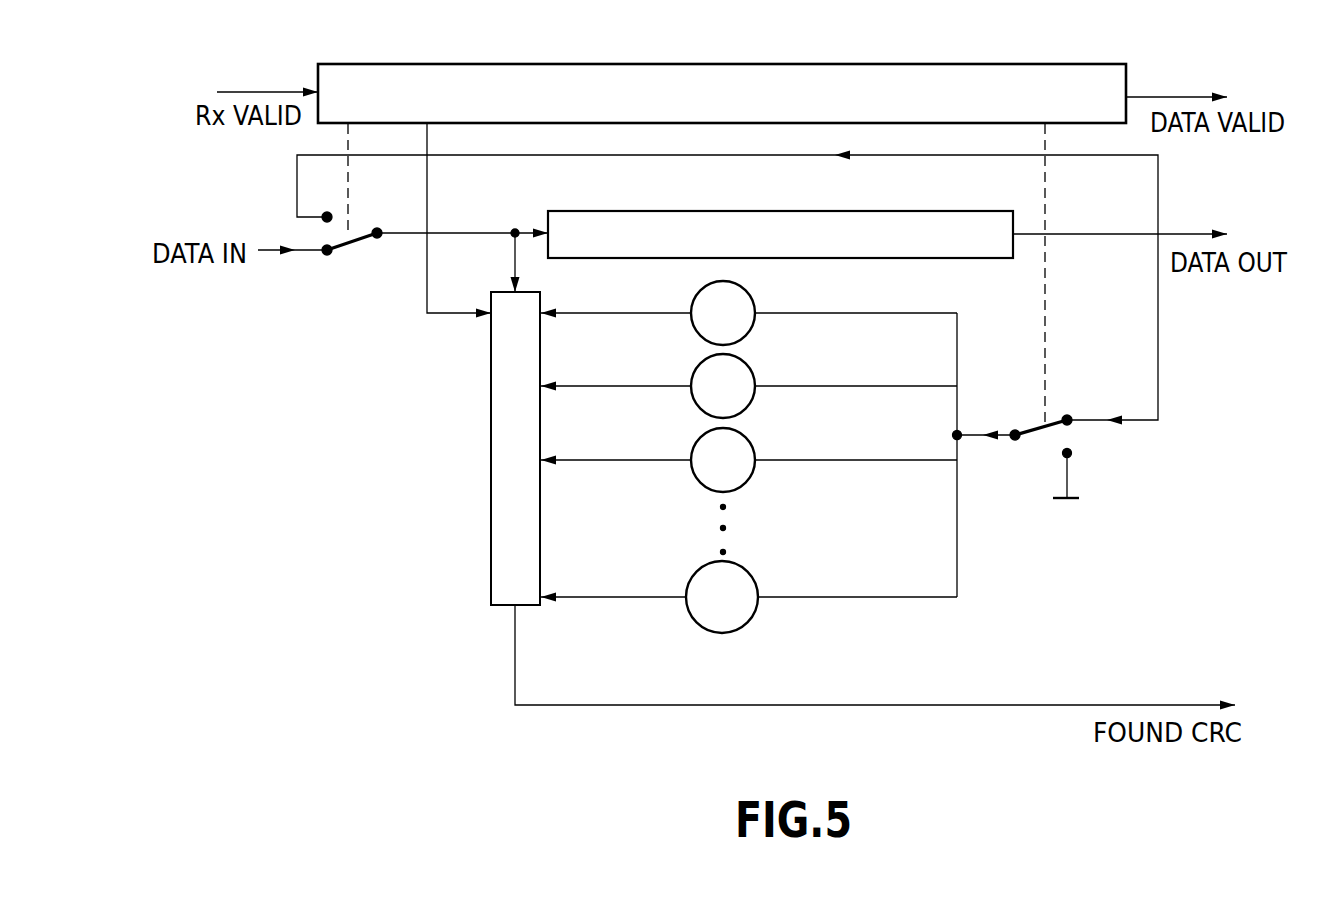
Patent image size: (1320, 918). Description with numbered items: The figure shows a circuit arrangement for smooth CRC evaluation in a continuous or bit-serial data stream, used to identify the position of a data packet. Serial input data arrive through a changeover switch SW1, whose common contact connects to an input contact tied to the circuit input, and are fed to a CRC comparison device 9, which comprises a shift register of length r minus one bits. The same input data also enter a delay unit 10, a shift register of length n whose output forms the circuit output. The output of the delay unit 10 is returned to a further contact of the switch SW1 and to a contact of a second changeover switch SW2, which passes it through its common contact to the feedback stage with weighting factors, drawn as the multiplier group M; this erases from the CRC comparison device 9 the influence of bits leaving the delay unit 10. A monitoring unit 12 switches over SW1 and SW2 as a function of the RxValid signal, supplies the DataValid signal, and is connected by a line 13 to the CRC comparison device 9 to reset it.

The CRC comparison device 9 is at (491, 447).
The delay unit 10 is at (915, 211).
The monitoring unit 12 is at (915, 64).
The line 13 is at (427, 300).
The multiplier coefficients a0..a(r-2) M is at (811, 605).
The changeover switch SW1 is at (356, 233).
The changeover switch SW2 is at (1043, 430).